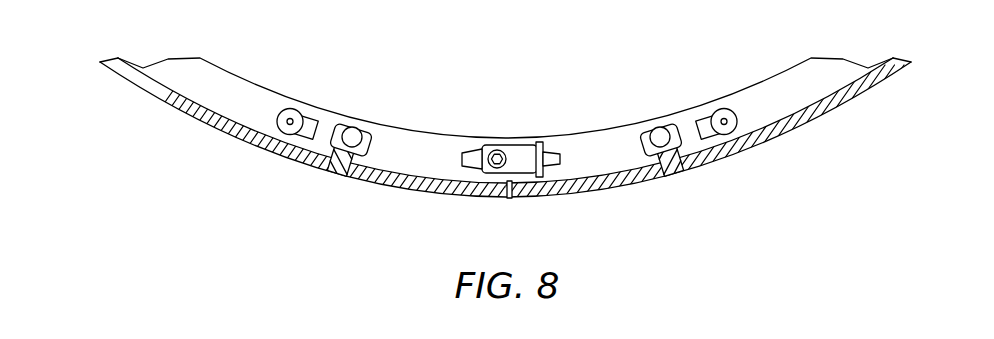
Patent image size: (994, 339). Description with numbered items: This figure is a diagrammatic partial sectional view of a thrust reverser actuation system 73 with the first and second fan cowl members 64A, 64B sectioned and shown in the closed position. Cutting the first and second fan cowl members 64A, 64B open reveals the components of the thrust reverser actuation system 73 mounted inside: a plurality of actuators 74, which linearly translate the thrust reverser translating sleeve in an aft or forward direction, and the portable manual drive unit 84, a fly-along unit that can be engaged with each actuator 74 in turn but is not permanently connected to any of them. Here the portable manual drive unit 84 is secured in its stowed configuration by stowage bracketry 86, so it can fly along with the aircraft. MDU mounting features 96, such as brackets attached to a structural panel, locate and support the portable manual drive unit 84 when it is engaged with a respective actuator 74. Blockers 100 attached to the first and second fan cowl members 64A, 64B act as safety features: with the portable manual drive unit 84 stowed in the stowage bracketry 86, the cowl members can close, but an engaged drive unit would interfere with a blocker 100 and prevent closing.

The thrust reverser actuation system 73 is at (118, 111).
The first fan cowl member 64A is at (190, 116).
The second fan cowl member 64B is at (828, 112).
The actuator 74 is at (287, 108).
The MDU mounting feature 96 is at (355, 125).
The blocker 100 is at (340, 174).
The portable manual drive unit 84 is at (519, 145).
The stowage bracketry 86 is at (468, 170).